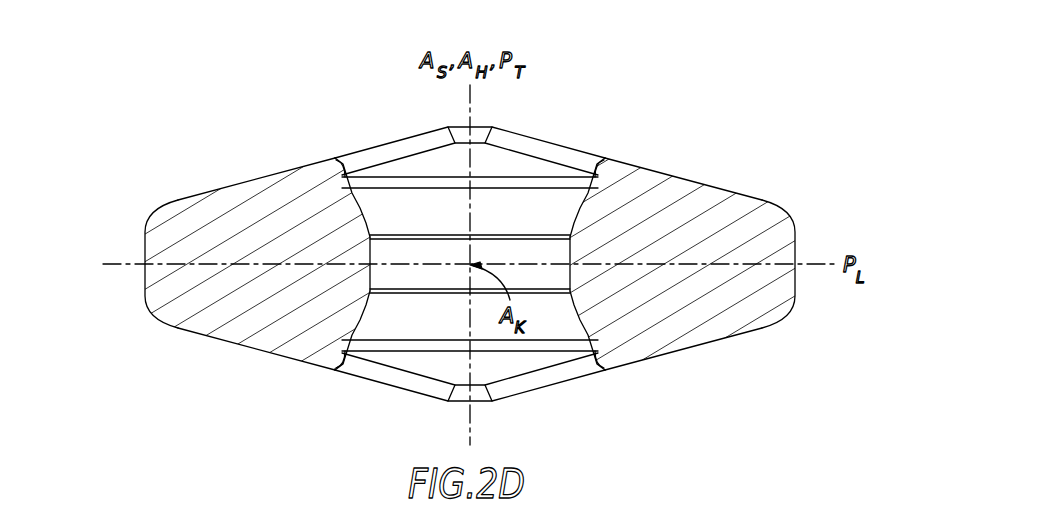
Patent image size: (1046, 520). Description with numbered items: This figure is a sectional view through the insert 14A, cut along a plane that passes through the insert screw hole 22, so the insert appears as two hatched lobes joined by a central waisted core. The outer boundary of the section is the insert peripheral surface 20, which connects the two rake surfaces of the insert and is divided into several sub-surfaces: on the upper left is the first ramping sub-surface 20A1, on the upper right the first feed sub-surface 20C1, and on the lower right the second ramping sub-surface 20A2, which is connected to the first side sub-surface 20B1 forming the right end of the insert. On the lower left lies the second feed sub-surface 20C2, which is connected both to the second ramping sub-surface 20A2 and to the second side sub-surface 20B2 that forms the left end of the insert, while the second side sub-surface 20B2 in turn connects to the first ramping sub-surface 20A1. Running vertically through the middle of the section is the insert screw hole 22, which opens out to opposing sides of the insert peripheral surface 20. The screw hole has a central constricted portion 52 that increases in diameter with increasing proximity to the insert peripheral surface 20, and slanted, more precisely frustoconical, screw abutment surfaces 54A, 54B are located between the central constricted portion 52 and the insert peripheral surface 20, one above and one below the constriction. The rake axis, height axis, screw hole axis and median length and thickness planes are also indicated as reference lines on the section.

The insert 14A is at (519, 236).
The insert peripheral surface 20 is at (519, 263).
The first ramping sub-surface 20A1 is at (312, 166).
The second ramping sub-surface 20A2 is at (630, 367).
The first side sub-surface 20B1 is at (797, 250).
The second side sub-surface 20B2 is at (143, 248).
The first feed sub-surface 20C1 is at (682, 177).
The second feed sub-surface 20C2 is at (403, 387).
The insert screw hole 22 is at (548, 138).
The central constricted portion 52 is at (384, 250).
The screw abutment surface 54A is at (362, 207).
The screw abutment surface 54B is at (350, 362).